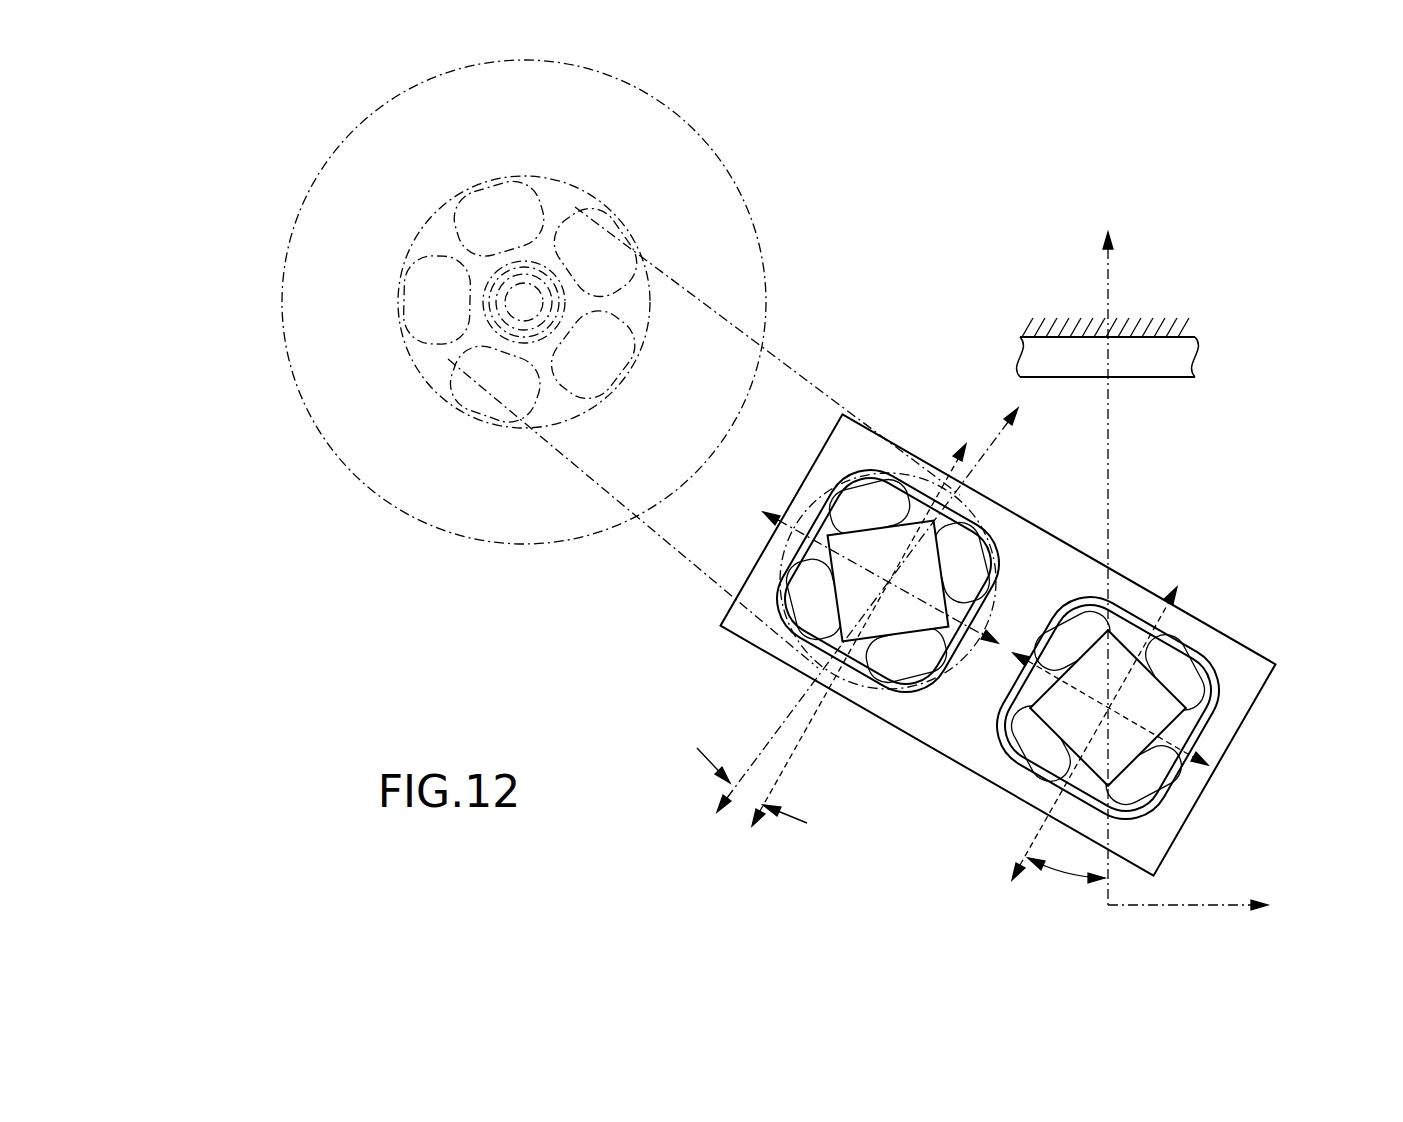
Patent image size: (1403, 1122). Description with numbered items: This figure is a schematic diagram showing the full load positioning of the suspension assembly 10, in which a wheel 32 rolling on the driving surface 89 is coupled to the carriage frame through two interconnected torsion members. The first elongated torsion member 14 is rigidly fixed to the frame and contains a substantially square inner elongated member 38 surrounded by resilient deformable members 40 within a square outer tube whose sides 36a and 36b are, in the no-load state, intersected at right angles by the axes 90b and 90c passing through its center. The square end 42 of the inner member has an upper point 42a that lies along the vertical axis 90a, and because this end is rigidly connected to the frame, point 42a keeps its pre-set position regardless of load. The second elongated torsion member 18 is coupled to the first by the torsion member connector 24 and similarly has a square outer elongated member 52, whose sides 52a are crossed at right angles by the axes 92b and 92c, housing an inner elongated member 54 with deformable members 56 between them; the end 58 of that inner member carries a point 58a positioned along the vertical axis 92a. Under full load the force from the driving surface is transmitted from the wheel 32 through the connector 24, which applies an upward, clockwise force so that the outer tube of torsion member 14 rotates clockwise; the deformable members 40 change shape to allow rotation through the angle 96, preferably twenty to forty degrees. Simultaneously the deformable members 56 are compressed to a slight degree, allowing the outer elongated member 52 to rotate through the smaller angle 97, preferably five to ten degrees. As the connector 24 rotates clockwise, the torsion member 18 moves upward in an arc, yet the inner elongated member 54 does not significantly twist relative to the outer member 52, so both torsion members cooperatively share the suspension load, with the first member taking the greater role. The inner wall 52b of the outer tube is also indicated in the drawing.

The suspension assembly 10 is at (1263, 497).
The elongated torsion member 14 is at (1150, 822).
The elongated torsion member 18 is at (767, 691).
The torsion member connector 24 is at (1008, 505).
The wheel 32 is at (323, 438).
The side of outer elongated member 36a is at (1175, 628).
The side of outer elongated member 36b is at (1003, 693).
The inner elongated member 38 is at (1177, 720).
The deformable members 40 is at (1085, 625).
The end of inner elongated member 42 is at (1088, 675).
The upper point of end 42a is at (1123, 628).
The outer elongated member 52 is at (775, 617).
The sides of outer elongated member 52a is at (805, 650).
The first opening inner wall 52b is at (787, 547).
The inner elongated member 54 is at (870, 527).
The deformable members 56 is at (875, 503).
The end of inner elongated member 58 is at (907, 607).
The point of end 58a is at (917, 490).
The driving surface 89 is at (1220, 907).
The vertical axis 90a is at (1132, 455).
The axis 90b is at (1013, 827).
The axis 90c is at (1213, 775).
The vertical axis 92a is at (1017, 442).
The axis 92b is at (950, 467).
The axis 92c is at (797, 528).
The angle 96 is at (1063, 872).
The angle 97 is at (747, 797).